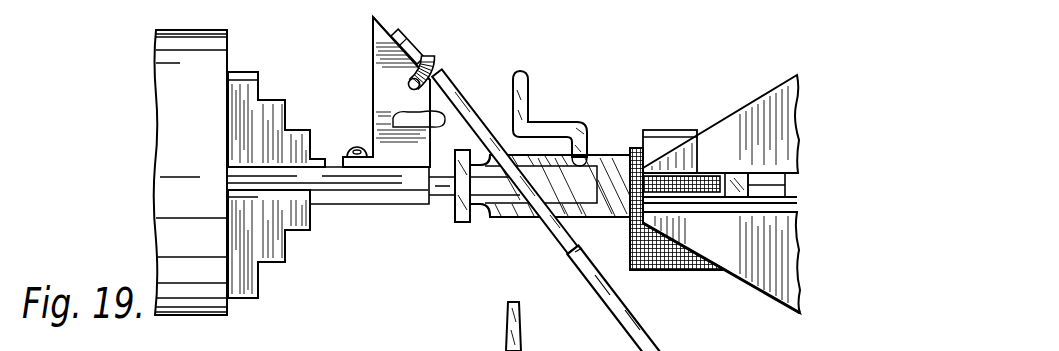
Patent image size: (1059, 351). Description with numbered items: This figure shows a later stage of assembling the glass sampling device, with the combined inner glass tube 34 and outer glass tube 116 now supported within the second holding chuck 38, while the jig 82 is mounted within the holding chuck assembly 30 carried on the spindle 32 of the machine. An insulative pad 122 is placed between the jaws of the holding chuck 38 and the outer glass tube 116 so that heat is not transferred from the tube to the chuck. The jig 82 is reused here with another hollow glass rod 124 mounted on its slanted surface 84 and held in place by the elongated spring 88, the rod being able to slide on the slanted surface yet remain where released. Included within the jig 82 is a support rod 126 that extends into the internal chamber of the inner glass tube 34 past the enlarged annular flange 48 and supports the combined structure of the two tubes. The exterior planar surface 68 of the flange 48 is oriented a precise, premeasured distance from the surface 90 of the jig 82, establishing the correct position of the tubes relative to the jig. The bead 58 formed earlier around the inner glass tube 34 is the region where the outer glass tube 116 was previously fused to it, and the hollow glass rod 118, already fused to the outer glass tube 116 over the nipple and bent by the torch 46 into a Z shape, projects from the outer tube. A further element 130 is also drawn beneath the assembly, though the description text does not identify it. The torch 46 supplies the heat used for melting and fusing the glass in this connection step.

The holding chuck assembly 30 is at (268, 66).
The spindle 32 is at (154, 90).
The inner glass tube 34 is at (596, 158).
The second holding chuck 38 is at (750, 88).
The torch 46 is at (602, 304).
The enlarged annular flange 48 is at (475, 220).
The bead 58 is at (495, 218).
The exterior planar surface 68 is at (455, 214).
The jig 82 is at (392, 93).
The slanted surface 84 is at (390, 25).
The elongated spring 88 is at (436, 56).
The surface 90 is at (392, 120).
The outer glass tube 116 is at (624, 220).
The hollow glass rod 118 is at (553, 120).
The insulative pad 122 is at (690, 272).
The hollow glass rod 124 is at (452, 80).
The support rod 126 is at (440, 196).
The locating pin 130 is at (505, 330).